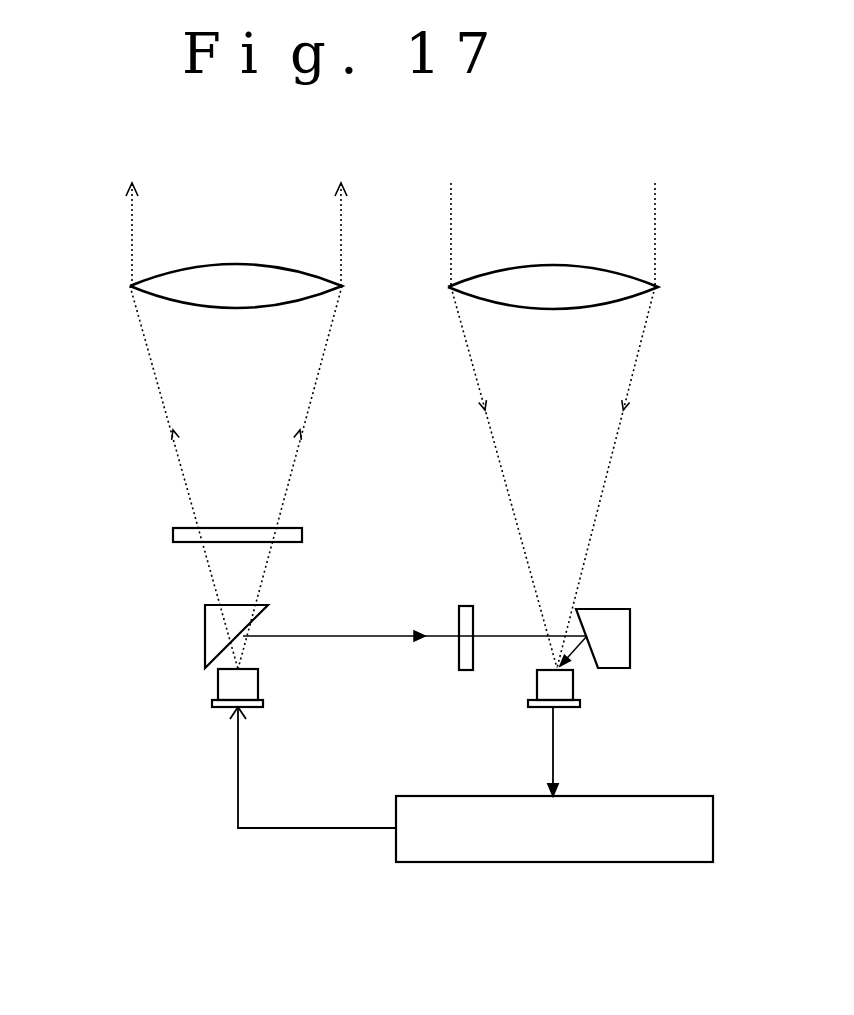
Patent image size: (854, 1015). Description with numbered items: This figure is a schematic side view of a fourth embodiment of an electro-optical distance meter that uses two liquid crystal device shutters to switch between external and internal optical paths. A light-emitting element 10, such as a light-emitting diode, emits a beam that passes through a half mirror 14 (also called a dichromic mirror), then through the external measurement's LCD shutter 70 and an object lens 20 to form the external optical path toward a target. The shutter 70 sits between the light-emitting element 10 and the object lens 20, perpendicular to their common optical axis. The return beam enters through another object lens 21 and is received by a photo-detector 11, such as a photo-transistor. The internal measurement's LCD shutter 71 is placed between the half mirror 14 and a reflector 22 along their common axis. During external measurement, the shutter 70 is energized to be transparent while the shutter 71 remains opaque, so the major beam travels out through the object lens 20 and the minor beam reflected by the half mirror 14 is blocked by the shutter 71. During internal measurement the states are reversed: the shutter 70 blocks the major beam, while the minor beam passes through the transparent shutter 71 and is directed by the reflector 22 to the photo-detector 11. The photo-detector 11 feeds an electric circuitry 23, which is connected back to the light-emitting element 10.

The light-emitting element 10 is at (262, 686).
The photo-detector 11 is at (535, 685).
The half mirror 14 is at (205, 635).
The object lens 20 is at (162, 273).
The object lens 21 is at (635, 275).
The reflector 22 is at (632, 623).
The electric circuitry 23 is at (683, 796).
The LCD shutter 70 is at (178, 527).
The LCD shutter 71 is at (459, 618).